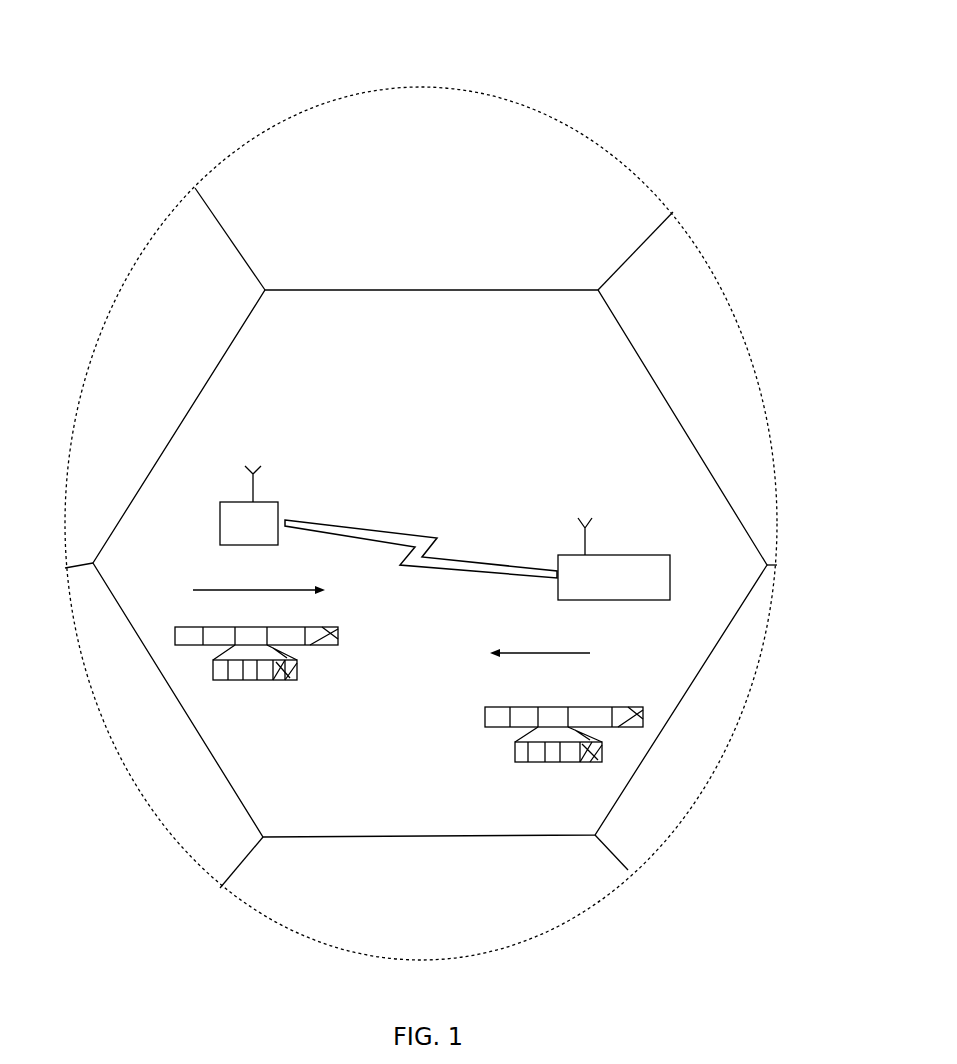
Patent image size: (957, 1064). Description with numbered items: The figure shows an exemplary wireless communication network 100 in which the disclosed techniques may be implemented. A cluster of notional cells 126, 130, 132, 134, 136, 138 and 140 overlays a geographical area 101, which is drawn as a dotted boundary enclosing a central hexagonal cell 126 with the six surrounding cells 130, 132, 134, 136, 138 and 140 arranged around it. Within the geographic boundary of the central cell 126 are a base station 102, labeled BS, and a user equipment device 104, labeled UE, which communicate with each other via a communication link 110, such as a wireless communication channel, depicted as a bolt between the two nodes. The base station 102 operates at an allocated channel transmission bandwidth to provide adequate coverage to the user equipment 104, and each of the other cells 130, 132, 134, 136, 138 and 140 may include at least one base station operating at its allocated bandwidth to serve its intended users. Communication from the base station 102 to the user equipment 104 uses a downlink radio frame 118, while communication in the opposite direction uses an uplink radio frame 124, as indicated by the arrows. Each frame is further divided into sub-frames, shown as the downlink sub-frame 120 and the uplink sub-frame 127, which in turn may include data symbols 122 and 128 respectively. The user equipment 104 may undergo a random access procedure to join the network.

The wireless communication network 100 is at (377, 46).
The geographical area 101 is at (562, 112).
The base station 102 is at (220, 518).
The user equipment device 104 is at (640, 555).
The communication link 110 is at (417, 530).
The downlink radio frame 118 is at (175, 635).
The sub-frame 120 is at (213, 667).
The data symbols 122 is at (272, 686).
The uplink radio frame 124 is at (615, 703).
The cell 126 is at (300, 352).
The sub-frame 127 is at (515, 752).
The data symbols 128 is at (579, 775).
The cell 130 is at (152, 252).
The cell 132 is at (282, 142).
The cell 134 is at (693, 282).
The cell 136 is at (658, 818).
The cell 138 is at (307, 903).
The cell 140 is at (150, 780).